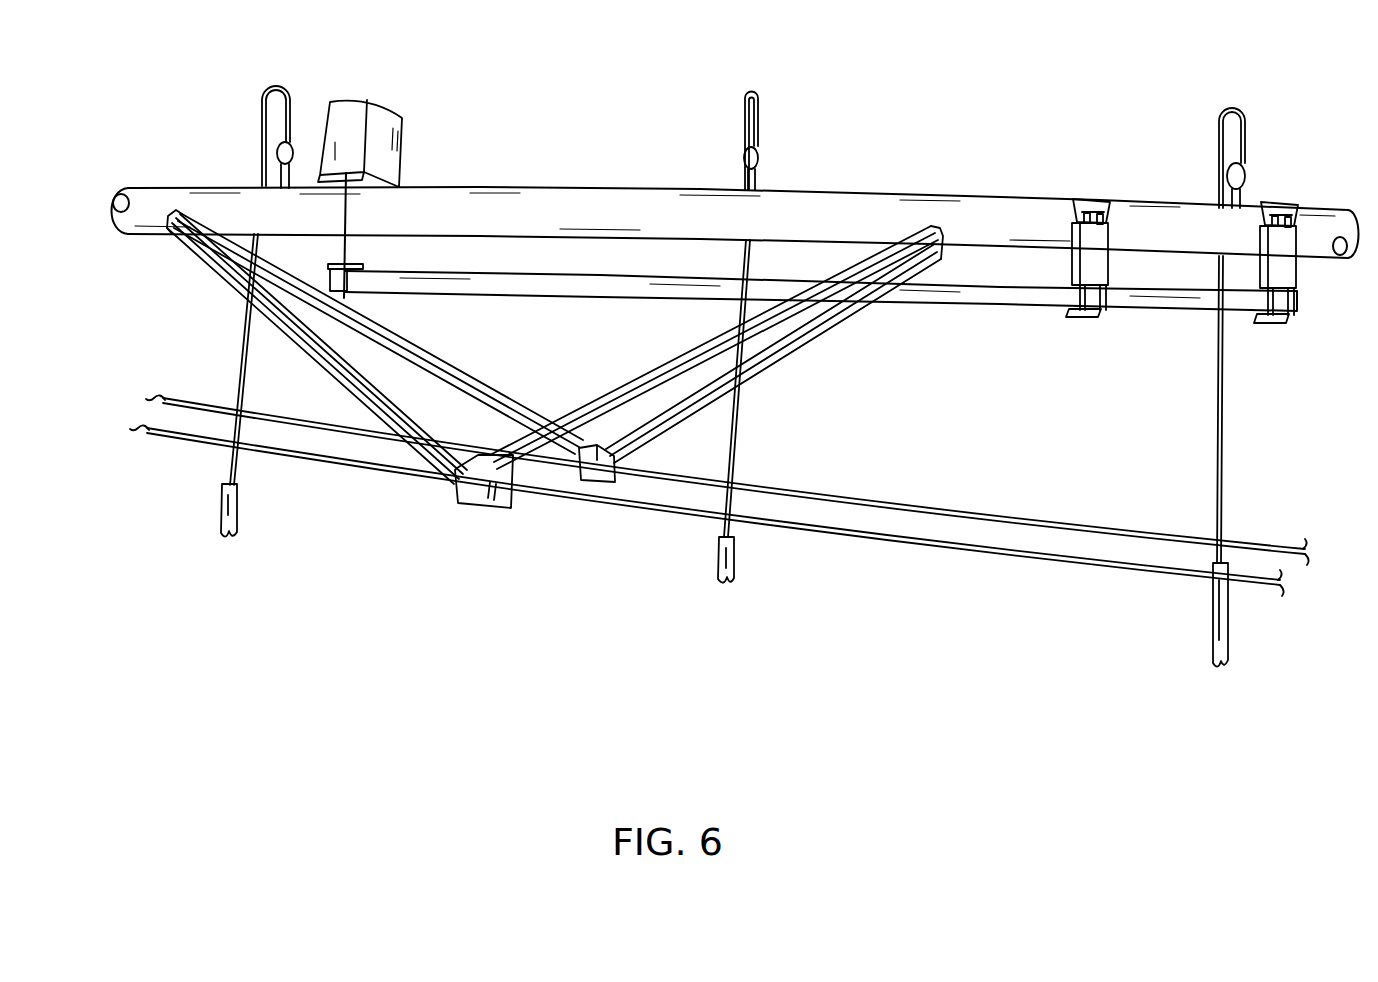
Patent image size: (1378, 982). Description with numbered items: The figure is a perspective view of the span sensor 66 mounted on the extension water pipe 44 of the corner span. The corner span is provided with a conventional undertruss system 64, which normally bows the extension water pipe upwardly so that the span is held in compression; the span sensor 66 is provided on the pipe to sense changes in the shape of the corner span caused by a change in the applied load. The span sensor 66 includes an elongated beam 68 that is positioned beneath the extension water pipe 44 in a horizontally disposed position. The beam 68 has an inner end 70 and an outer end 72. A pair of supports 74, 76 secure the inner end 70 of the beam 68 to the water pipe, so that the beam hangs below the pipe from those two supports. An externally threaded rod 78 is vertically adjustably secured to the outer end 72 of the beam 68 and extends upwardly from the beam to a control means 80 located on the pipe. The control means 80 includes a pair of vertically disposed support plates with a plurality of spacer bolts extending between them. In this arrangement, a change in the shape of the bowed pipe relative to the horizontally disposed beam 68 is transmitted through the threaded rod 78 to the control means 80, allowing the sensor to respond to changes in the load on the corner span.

The extension water pipe 44 is at (808, 208).
The undertruss system 64 is at (1025, 562).
The span sensor 66 is at (1032, 340).
The elongated beam 68 is at (587, 296).
The inner end 70 is at (1298, 303).
The outer end 72 is at (330, 272).
The support 74 is at (1285, 253).
The support 76 is at (1100, 243).
The externally threaded rod 78 is at (350, 203).
The control means 80 is at (405, 104).